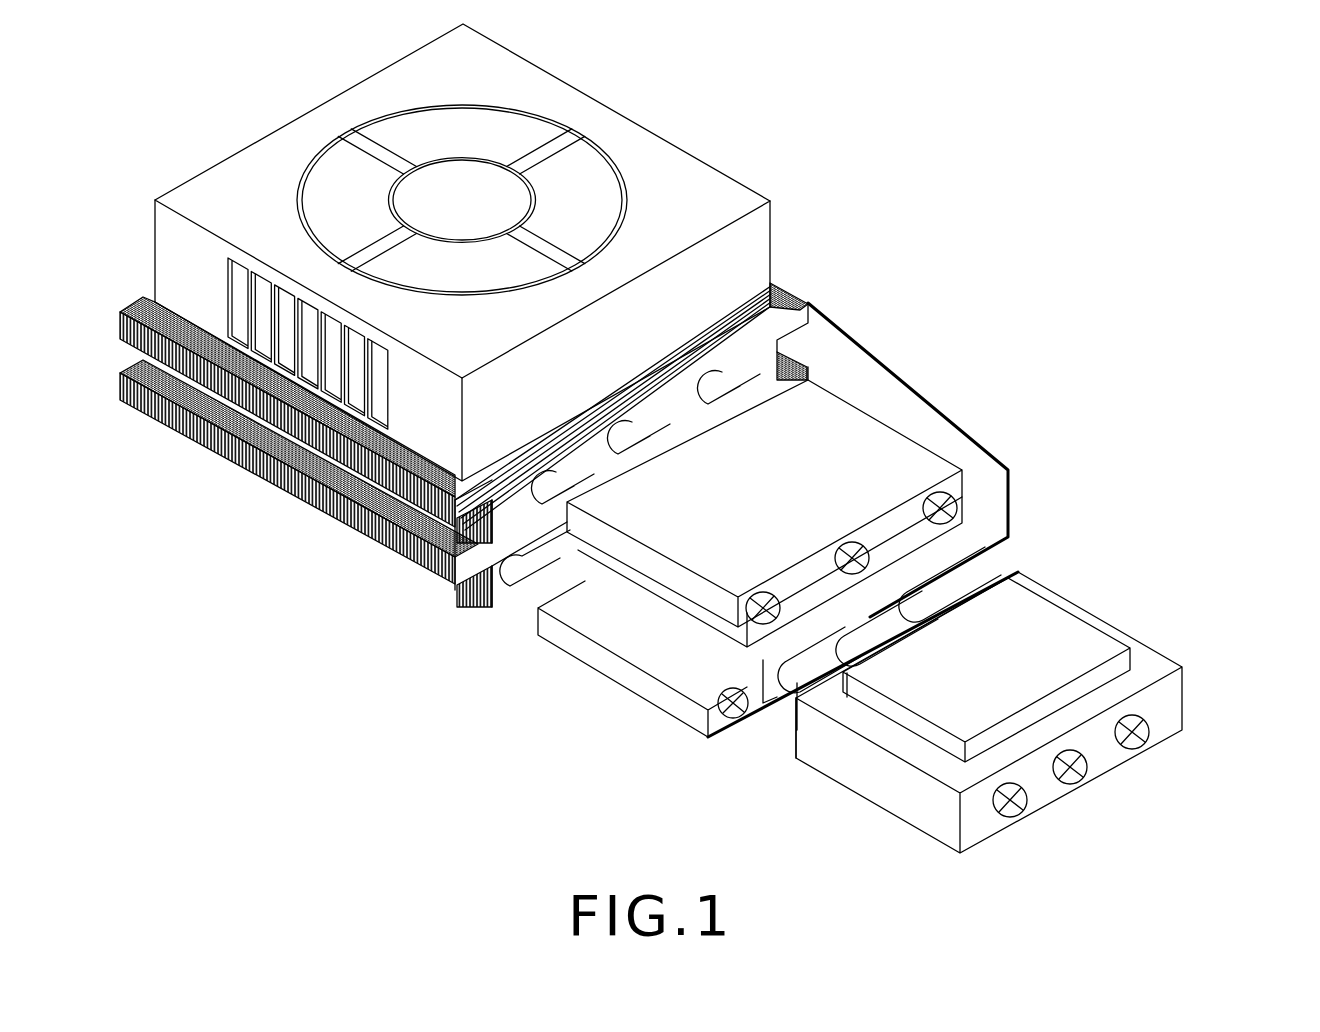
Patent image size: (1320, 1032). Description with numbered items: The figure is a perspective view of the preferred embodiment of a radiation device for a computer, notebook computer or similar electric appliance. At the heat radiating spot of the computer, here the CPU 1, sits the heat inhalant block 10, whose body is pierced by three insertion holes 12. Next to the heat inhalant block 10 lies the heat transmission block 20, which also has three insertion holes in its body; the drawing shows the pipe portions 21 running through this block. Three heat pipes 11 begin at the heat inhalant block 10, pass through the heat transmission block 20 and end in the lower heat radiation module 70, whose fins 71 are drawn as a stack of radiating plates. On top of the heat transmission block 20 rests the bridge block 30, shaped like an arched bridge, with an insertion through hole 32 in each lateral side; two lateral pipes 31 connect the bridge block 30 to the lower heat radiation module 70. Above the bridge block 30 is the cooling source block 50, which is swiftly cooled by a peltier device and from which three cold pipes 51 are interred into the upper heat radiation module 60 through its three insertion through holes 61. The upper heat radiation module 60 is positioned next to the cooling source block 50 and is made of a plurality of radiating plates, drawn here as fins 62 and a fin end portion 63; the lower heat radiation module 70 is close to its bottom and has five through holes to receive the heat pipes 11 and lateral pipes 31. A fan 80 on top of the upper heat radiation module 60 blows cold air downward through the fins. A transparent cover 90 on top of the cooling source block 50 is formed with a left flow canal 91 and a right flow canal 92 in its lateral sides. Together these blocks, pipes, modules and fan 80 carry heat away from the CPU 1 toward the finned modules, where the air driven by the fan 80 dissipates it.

The CPU 1 is at (996, 718).
The heat inhalant block 10 is at (996, 721).
The heat pipes 11 is at (800, 680).
The insertion holes 12 is at (1070, 780).
The heat transmission block 20 is at (1016, 718).
The heat pipes 21 is at (888, 665).
The bridge block 30 is at (746, 670).
The lateral pipes 31 is at (742, 713).
The insertion through hole 32 is at (755, 710).
The cooling source block 50 is at (820, 493).
The cold pipes 51 is at (737, 388).
The upper heat radiation module 60 is at (533, 409).
The insertion through holes 61 is at (433, 573).
The lower fins 62 is at (335, 485).
The fin end 63 is at (797, 347).
The lower heat radiation module 70 is at (461, 589).
The fins of second heat sink 71 is at (515, 560).
The fan 80 is at (643, 163).
The transparent cover 90 is at (744, 466).
The left flow canal 91 is at (430, 568).
The right flow canal 92 is at (935, 430).